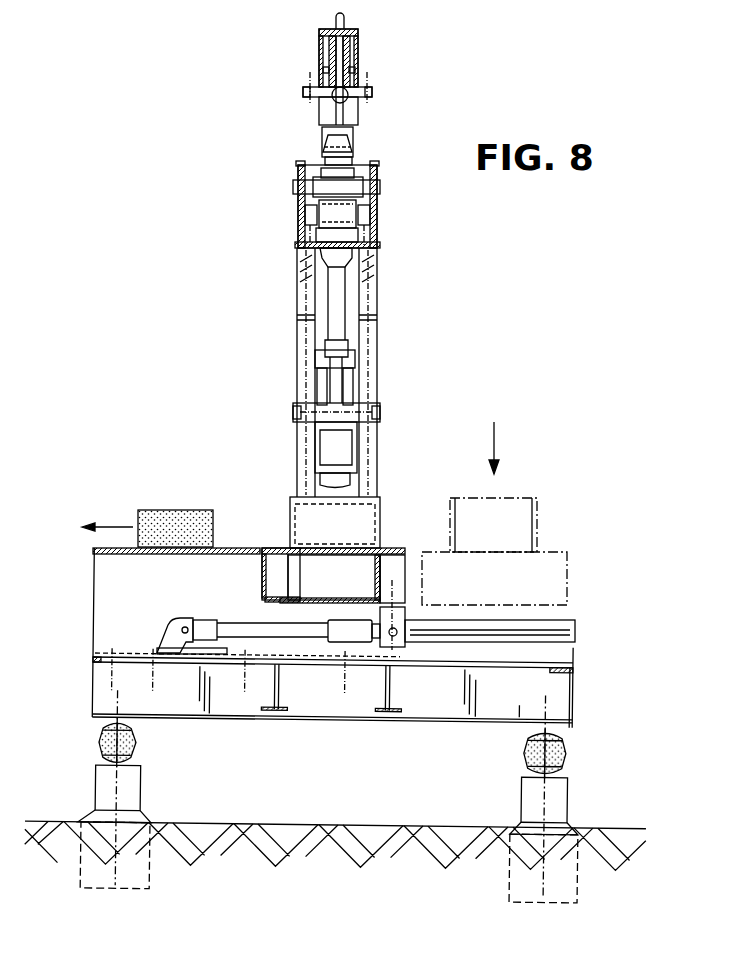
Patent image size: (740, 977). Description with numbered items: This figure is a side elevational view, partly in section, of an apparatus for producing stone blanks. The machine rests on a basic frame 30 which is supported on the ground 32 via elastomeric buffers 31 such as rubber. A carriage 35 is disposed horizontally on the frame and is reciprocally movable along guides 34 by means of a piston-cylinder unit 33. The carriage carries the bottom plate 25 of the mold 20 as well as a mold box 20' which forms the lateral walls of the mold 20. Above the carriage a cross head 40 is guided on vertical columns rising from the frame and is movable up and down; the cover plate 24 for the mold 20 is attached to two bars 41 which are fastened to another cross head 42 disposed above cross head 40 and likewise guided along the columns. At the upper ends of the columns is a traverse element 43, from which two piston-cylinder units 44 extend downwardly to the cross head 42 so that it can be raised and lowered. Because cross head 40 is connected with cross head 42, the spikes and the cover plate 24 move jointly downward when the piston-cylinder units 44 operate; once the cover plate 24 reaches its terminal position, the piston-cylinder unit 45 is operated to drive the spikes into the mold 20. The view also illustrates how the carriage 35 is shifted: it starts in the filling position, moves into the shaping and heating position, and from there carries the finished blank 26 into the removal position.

The mold 20 is at (504, 487).
The mold box 20' is at (272, 543).
The cover plate 24 is at (312, 513).
The bottom plate 25 is at (382, 552).
The finished blank 26 is at (172, 510).
The basic frame 30 is at (227, 705).
The elastomeric buffers 31 is at (134, 742).
The ground 32 is at (375, 845).
The piston-cylinder unit 33 is at (342, 627).
The guides 34 is at (562, 628).
The carriage 35 is at (398, 570).
The cross head 40 is at (357, 398).
The bars 41 is at (360, 352).
The cross head 42 is at (385, 235).
The traverse element 43 is at (350, 45).
The piston-cylinder units 44 is at (345, 110).
The piston-cylinder unit 45 is at (348, 204).